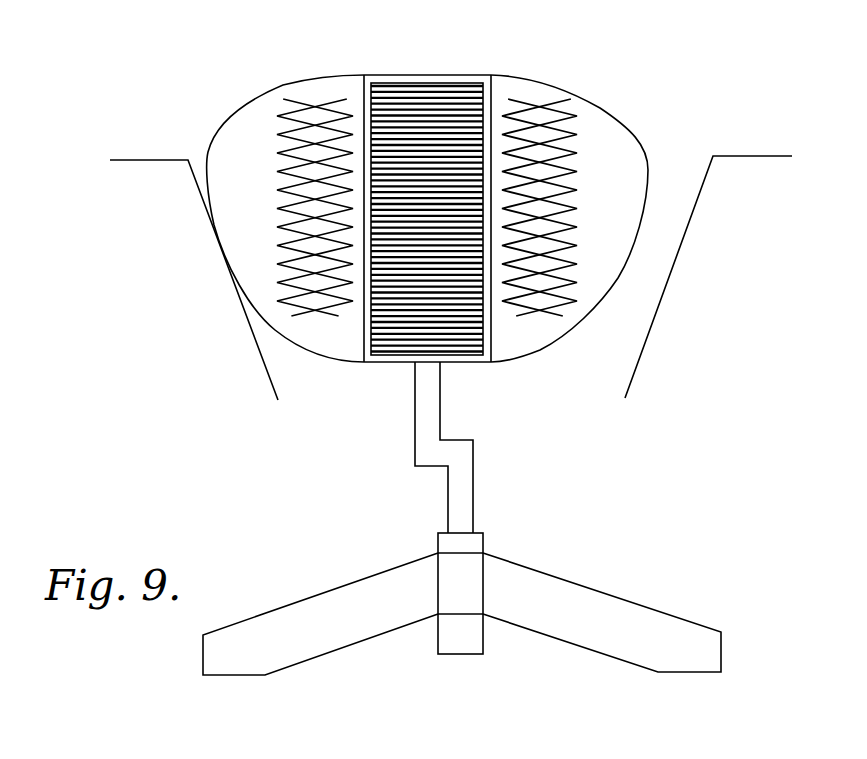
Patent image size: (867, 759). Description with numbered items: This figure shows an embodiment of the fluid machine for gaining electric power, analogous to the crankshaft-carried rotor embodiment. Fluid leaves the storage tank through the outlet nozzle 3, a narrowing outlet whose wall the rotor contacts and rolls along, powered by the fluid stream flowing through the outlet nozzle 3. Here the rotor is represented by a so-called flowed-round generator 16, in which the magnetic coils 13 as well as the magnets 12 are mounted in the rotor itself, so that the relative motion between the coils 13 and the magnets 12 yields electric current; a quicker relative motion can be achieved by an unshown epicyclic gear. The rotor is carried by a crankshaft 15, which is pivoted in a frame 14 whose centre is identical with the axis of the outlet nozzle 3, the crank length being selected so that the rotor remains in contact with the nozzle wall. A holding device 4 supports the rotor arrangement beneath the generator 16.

The outlet nozzle 3 is at (258, 347).
The holding device 4 is at (403, 502).
The magnets 12 is at (403, 98).
The magnetic coils 13 is at (543, 132).
The frame 14 is at (625, 613).
The crankshaft 15 is at (458, 452).
The flowed-round generator 16 is at (607, 318).